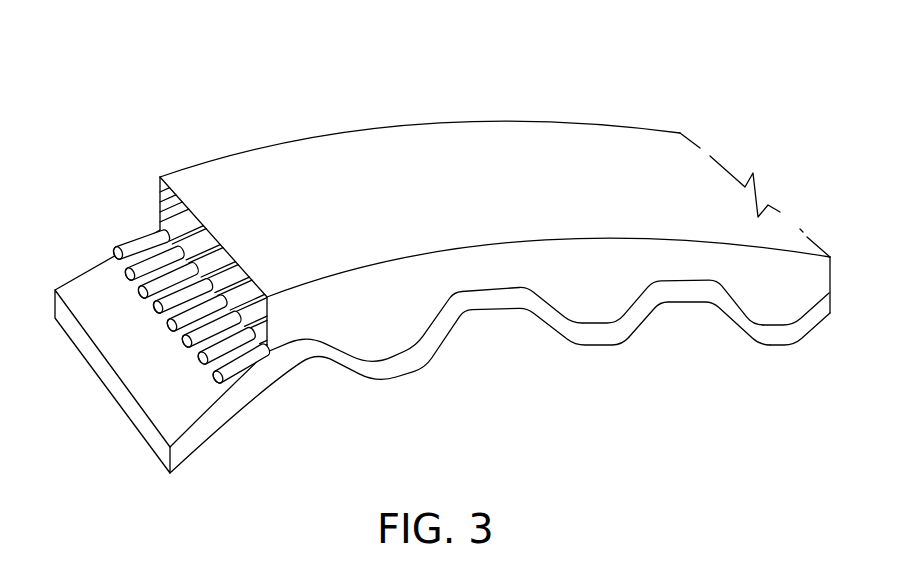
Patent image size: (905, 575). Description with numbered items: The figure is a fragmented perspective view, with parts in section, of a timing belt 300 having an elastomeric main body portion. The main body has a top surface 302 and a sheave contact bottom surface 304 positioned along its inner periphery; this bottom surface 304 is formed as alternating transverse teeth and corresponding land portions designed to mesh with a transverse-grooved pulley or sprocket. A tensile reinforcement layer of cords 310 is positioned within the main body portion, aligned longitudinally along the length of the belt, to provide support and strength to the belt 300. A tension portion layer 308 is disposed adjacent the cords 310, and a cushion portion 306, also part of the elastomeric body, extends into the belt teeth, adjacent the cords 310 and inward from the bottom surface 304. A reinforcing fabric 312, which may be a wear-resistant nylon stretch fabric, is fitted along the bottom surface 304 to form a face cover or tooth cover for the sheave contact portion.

The belt 300 is at (130, 65).
The top surface 302 is at (510, 153).
The sheave contact bottom surface 304 is at (358, 377).
The cushion portion 306 is at (384, 314).
The tension portion layer 308 is at (158, 192).
The tensile cords 310 is at (143, 293).
The reinforcing fabric 312 is at (683, 302).